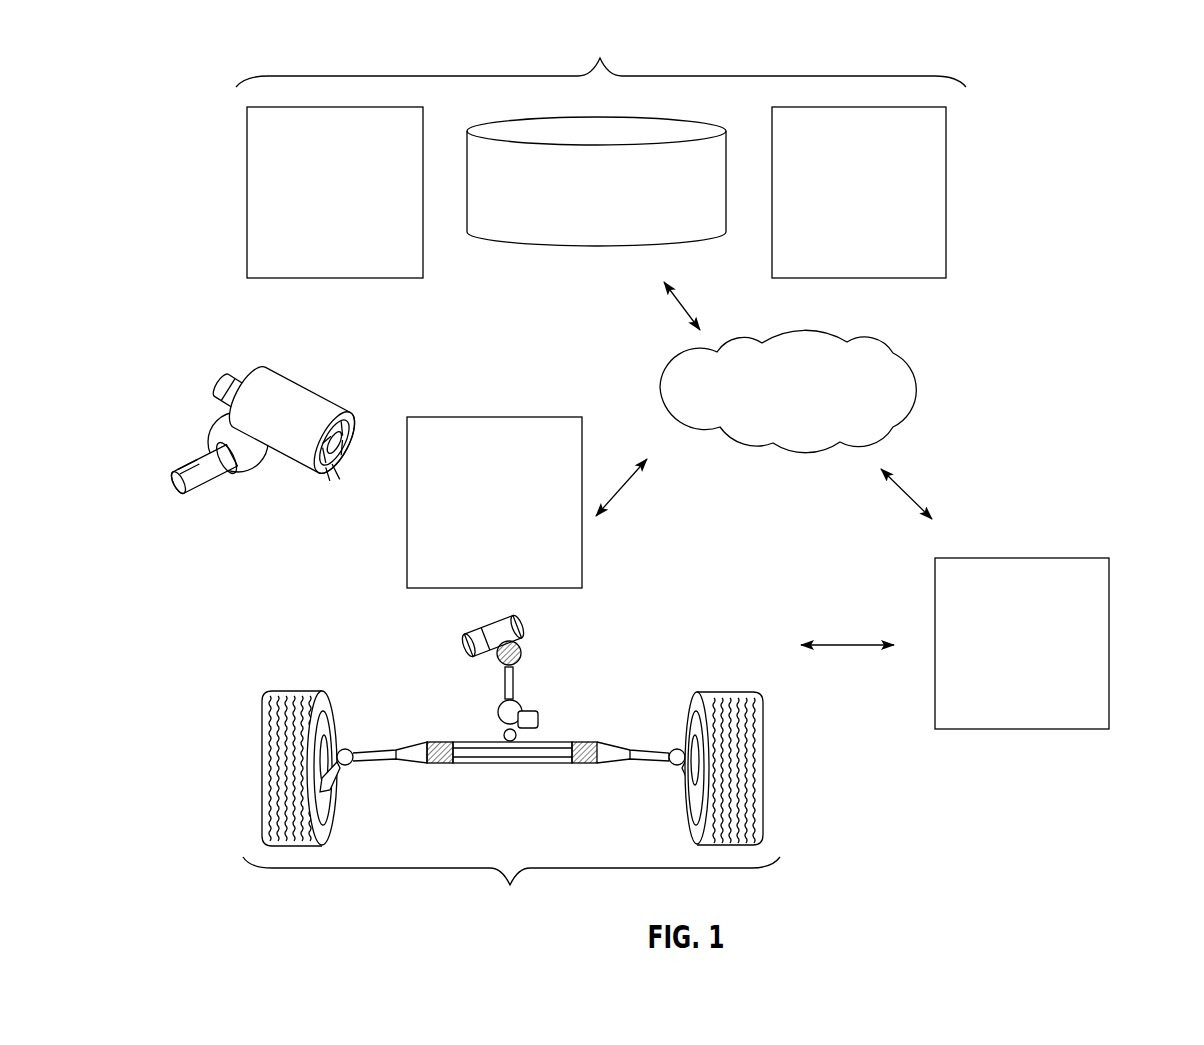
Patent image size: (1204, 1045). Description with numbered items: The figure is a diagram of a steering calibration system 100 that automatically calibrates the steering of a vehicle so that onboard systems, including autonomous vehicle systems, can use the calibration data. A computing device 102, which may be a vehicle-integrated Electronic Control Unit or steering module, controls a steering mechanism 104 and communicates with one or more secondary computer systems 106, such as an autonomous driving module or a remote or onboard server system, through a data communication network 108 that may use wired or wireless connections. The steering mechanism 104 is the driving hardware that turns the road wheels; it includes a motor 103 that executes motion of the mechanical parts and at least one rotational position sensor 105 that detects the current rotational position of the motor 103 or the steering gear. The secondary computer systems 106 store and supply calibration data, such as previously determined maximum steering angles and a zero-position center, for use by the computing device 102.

The steering calibration system 100 is at (1092, 90).
The computing device 102 is at (1063, 558).
The motor 103 is at (245, 373).
The steering mechanism 104 is at (511, 768).
The rotational position sensor 105 is at (536, 417).
The secondary computer systems 106 is at (601, 152).
The data communication network 108 is at (800, 331).